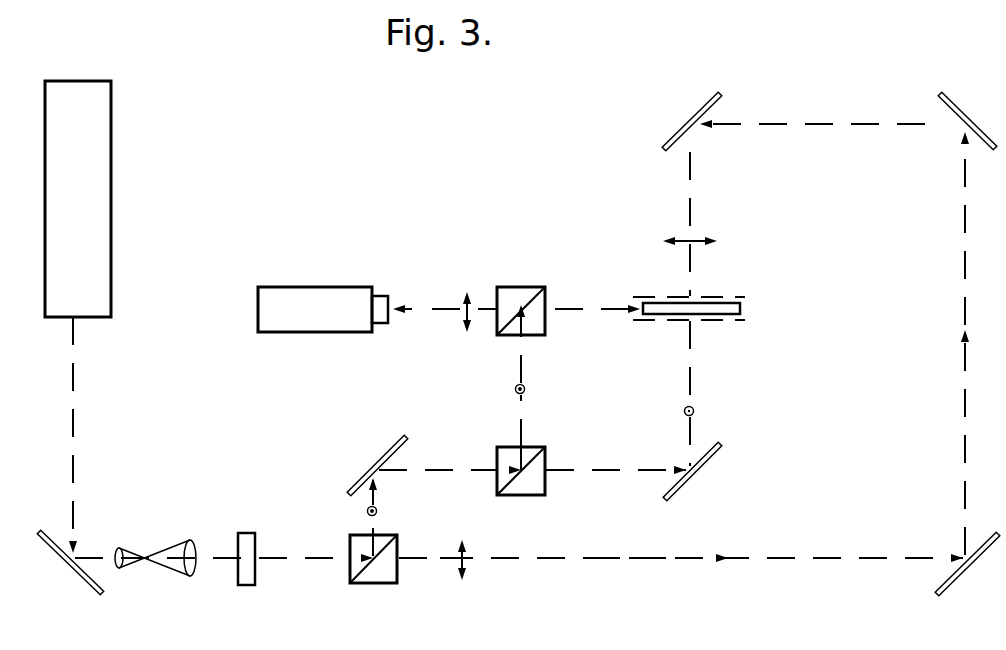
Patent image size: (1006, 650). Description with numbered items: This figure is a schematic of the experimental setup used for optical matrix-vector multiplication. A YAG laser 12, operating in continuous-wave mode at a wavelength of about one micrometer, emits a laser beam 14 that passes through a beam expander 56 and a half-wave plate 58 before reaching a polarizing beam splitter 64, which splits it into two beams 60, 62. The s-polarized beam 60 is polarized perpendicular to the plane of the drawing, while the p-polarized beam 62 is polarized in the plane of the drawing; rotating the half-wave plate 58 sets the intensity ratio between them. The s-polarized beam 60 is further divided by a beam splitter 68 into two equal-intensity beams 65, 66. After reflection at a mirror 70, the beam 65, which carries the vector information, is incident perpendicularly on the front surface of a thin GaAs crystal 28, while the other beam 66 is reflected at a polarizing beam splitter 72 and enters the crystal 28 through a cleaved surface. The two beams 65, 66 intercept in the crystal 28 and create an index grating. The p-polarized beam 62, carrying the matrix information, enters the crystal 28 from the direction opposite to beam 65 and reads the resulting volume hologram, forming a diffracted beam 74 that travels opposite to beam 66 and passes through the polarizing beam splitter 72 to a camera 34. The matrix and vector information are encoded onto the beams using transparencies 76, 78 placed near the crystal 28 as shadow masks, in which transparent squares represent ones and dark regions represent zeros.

The YAG laser 12 is at (106, 136).
The laser beam 14 is at (73, 455).
The GaAs crystal 28 is at (741, 304).
The camera 34 is at (296, 293).
The beam expander 56 is at (178, 545).
The half-wave plate 58 is at (255, 585).
The s-polarized beam 60 is at (432, 470).
The p-polarized beam 62 is at (690, 213).
The polarizing beam splitter 64 is at (397, 583).
The beam 65 is at (690, 397).
The beam 66 is at (521, 365).
The beam splitter 68 is at (545, 495).
The mirror 70 is at (720, 443).
The polarizing beam splitter 72 is at (512, 292).
The diffracted beam 74 is at (405, 309).
The transparency 76 is at (712, 321).
The transparency 78 is at (700, 296).